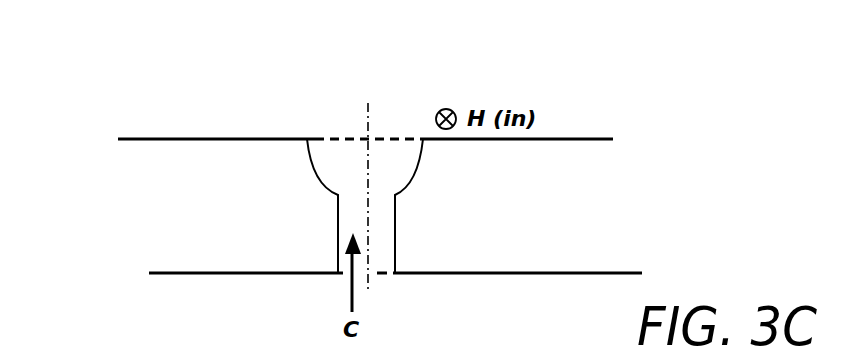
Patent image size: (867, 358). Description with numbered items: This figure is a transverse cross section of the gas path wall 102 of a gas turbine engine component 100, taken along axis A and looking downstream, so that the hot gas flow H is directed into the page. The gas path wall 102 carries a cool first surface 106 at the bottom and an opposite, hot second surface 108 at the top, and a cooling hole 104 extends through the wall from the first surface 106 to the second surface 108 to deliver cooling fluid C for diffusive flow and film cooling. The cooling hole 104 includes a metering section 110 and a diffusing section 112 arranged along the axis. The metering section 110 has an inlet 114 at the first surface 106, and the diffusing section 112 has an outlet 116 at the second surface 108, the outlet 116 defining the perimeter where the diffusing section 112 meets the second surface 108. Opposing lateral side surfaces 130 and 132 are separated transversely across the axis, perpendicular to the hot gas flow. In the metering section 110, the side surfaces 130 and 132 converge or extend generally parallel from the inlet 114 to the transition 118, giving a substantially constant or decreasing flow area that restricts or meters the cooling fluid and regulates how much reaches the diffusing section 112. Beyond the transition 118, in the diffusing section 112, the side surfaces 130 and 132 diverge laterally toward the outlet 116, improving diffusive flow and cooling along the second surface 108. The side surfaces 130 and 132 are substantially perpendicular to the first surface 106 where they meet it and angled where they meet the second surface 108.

The gas turbine engine component 100 is at (90, 94).
The gas path wall 102 is at (217, 188).
The cooling hole 104 is at (380, 174).
The first surface 106 is at (500, 275).
The second surface 108 is at (227, 137).
The metering section 110 is at (407, 195).
The diffusing section 112 is at (305, 140).
The inlet 114 is at (383, 275).
The outlet 116 is at (340, 137).
The transition 118 is at (318, 204).
The lateral side surface 130 is at (338, 256).
The lateral side surface 132 is at (417, 170).